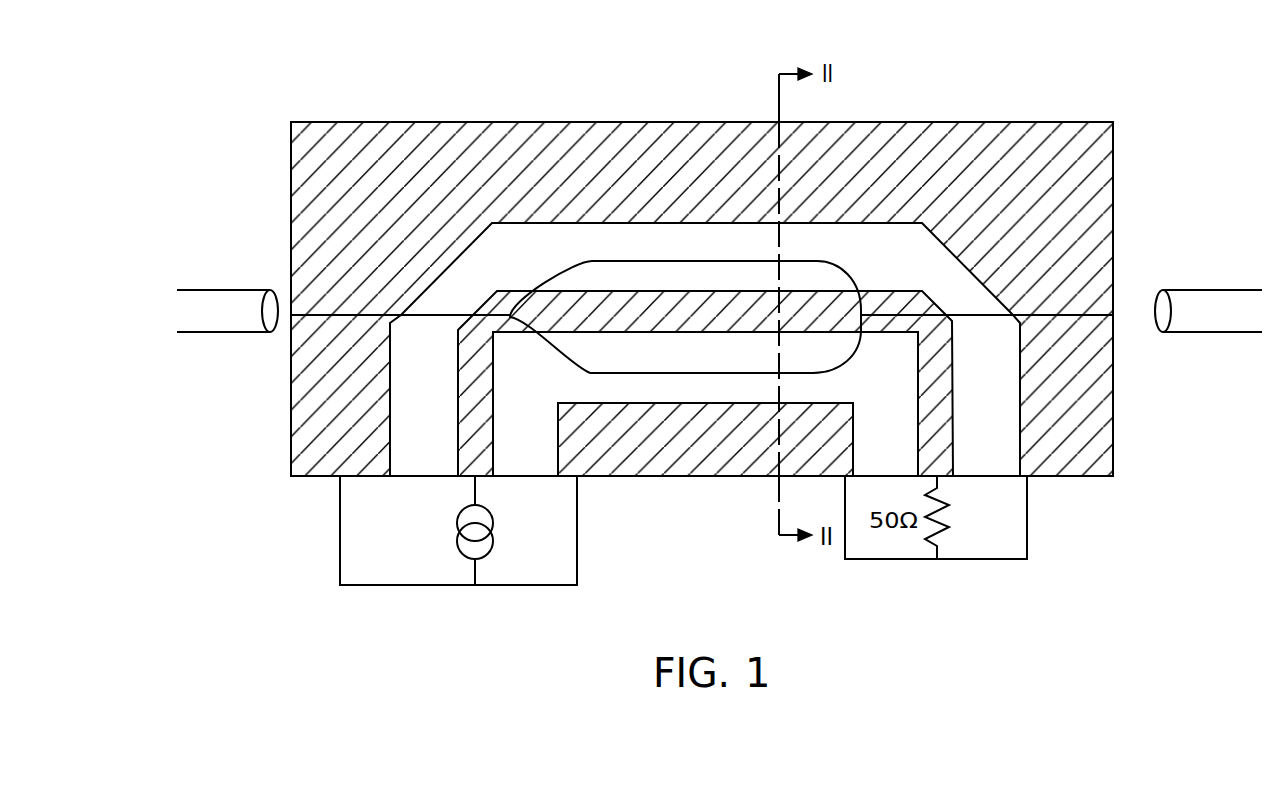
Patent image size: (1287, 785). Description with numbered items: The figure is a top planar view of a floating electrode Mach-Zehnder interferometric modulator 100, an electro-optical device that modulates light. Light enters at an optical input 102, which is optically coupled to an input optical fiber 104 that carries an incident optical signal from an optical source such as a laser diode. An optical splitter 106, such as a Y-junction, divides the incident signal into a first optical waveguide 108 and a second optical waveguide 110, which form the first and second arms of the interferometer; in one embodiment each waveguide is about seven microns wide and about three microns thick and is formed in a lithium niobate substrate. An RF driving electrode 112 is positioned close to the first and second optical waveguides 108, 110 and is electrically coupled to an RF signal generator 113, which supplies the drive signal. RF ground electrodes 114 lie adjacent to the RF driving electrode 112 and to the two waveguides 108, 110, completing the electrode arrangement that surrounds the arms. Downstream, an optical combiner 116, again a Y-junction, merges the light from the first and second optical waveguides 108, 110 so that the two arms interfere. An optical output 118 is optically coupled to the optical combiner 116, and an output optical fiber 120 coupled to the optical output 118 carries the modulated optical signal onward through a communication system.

The floating electrode Mach-Zehnder interferometric modulator 100 is at (324, 70).
The optical input 102 is at (291, 316).
The input optical fiber 104 is at (222, 300).
The optical splitter 106 is at (510, 312).
The first optical waveguide 108 is at (687, 260).
The second optical waveguide 110 is at (583, 373).
The RF driving electrode 112 is at (637, 333).
The RF signal generator 113 is at (457, 547).
The RF ground electrodes 114 is at (1013, 122).
The optical combiner 116 is at (877, 320).
The optical output 118 is at (1118, 317).
The output optical fiber 120 is at (1219, 297).